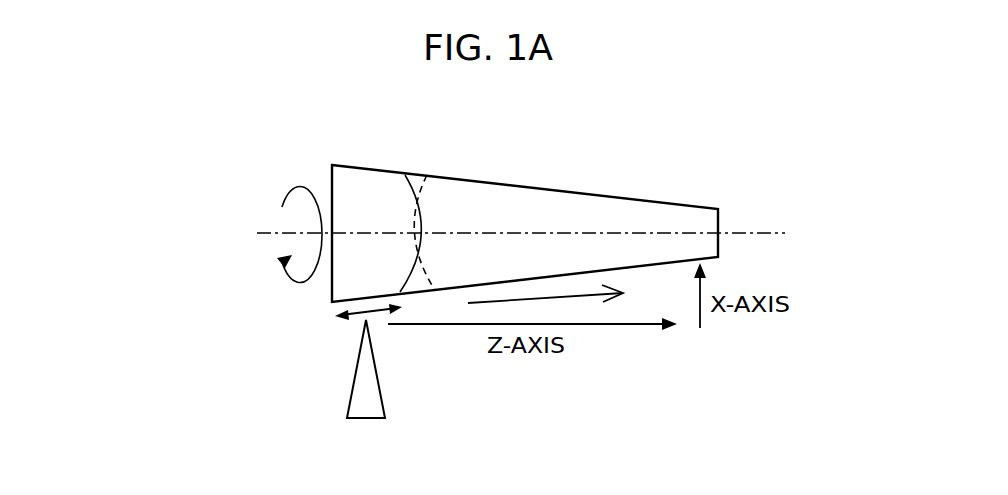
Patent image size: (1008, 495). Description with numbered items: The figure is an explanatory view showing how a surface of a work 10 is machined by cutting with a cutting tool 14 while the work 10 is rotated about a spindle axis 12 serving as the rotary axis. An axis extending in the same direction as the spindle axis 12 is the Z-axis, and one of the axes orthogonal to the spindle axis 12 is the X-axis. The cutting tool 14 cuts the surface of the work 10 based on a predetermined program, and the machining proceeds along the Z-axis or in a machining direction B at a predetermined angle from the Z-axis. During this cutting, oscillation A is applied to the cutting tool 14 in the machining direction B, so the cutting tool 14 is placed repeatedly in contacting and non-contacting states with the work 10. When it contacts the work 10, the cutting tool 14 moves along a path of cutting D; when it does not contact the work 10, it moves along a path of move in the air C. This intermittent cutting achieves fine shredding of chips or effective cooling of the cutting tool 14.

The work 10 is at (623, 198).
The spindle axis 12 is at (422, 235).
The cutting tool 14 is at (365, 418).
The oscillation A is at (355, 315).
The machining direction B is at (572, 298).
The path of move in the air C is at (402, 209).
The path of cutting D is at (438, 208).